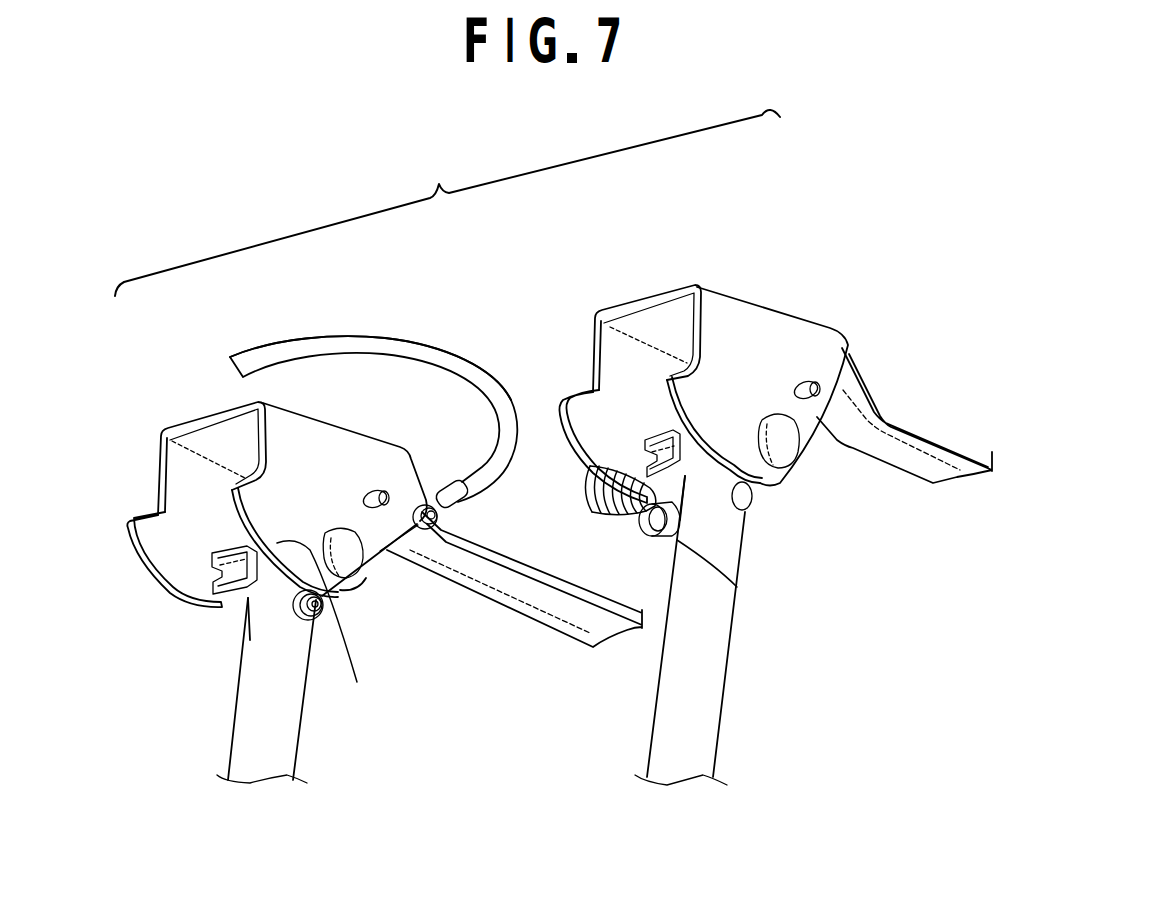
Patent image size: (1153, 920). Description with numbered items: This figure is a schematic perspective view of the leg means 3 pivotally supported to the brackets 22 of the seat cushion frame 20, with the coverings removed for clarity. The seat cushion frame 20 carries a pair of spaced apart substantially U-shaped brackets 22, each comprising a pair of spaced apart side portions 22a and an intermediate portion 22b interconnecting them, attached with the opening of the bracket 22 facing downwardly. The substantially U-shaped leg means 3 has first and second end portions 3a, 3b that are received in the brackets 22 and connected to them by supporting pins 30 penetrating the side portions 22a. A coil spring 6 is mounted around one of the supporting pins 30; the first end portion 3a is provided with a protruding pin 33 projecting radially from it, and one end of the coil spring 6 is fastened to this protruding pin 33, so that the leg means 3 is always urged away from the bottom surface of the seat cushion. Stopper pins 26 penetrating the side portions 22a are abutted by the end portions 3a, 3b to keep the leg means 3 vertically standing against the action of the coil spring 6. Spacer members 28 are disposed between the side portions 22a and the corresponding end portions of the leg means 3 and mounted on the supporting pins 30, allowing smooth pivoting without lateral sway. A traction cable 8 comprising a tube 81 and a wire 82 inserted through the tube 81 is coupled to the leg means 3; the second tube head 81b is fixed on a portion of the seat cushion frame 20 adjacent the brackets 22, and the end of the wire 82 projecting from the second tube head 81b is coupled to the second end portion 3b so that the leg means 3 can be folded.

The leg means 3 is at (299, 756).
The first end portion 3a is at (703, 603).
The second end portion 3b is at (272, 610).
The coil spring 6 is at (587, 505).
The traction cable 8 is at (350, 338).
The seat cushion frame 20 is at (540, 573).
The bracket 22 is at (153, 507).
The side portion 22a is at (153, 573).
The intermediate portion 22b is at (237, 408).
The stopper pin 26 is at (377, 503).
The spacer member 28 is at (230, 607).
The supporting pin 30 is at (366, 575).
The protruding pin 33 is at (737, 587).
The tube 81 is at (287, 337).
The second tube head 81b is at (445, 497).
The wire 82 is at (414, 528).